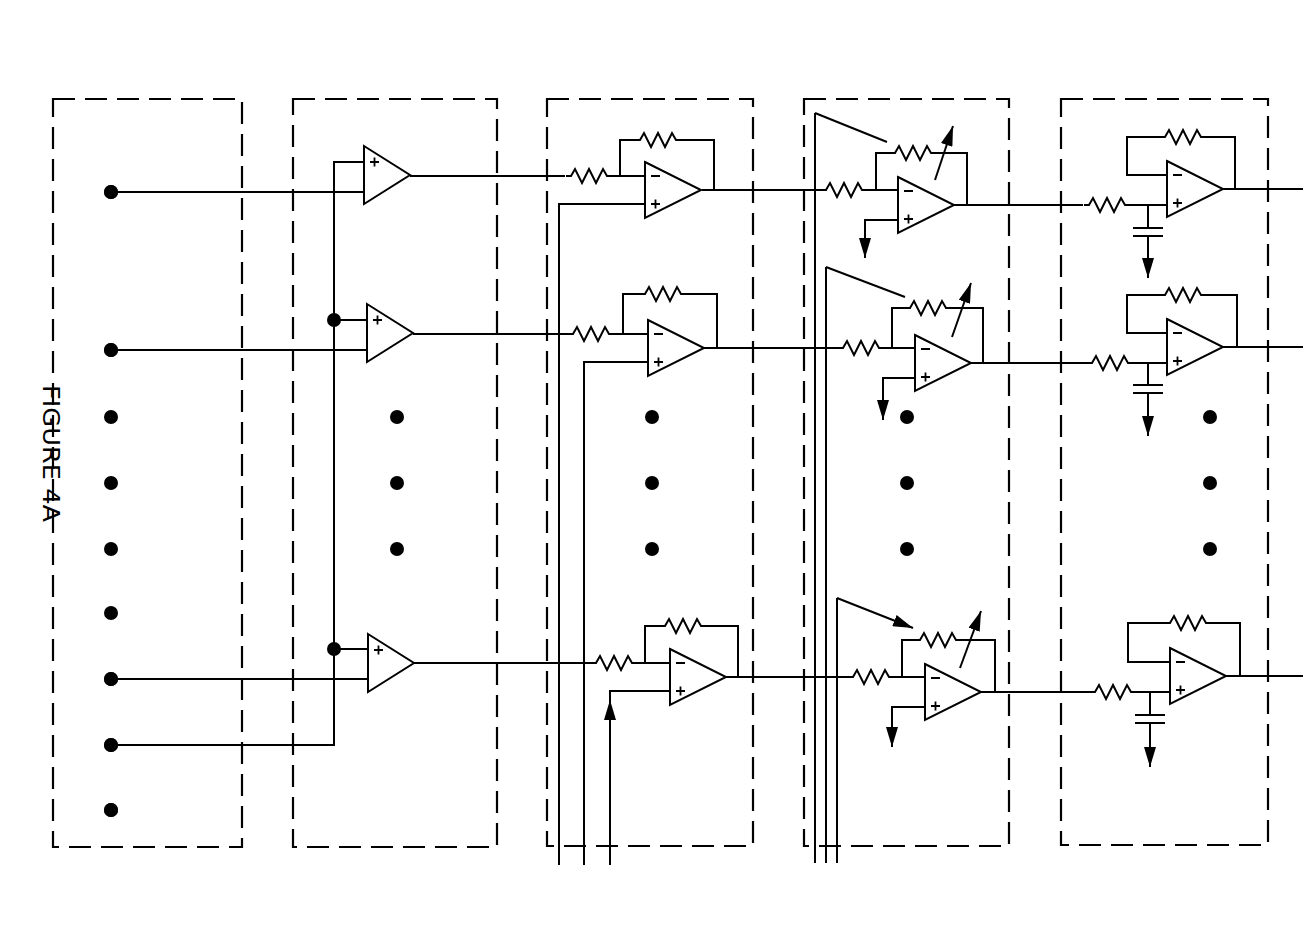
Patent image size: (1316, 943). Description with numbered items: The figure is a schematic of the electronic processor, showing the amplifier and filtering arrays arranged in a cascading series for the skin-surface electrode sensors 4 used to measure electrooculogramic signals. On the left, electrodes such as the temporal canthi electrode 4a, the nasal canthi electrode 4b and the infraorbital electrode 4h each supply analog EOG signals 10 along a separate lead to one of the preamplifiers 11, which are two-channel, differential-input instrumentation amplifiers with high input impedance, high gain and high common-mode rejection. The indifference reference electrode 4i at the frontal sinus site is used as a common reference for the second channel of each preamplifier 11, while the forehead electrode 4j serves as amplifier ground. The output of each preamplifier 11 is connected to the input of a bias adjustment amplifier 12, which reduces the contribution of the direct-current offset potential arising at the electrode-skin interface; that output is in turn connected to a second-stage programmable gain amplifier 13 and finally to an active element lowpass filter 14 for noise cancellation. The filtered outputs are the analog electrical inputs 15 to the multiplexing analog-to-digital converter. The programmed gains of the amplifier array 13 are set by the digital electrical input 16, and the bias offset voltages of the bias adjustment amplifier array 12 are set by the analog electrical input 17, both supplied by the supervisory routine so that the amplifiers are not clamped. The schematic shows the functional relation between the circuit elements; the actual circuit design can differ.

The skin-surface electrode sensors 4 is at (147, 431).
The temporal canthi electrode 4a is at (93, 192).
The nasal canthi electrode 4b is at (93, 350).
The infraorbital electrode 4h is at (93, 679).
The indifference reference electrode 4i is at (94, 745).
The amplifier ground electrode 4j is at (94, 810).
The analog EOG signals 10 is at (241, 175).
The preamplifiers 11 is at (355, 431).
The bias adjustment amplifiers 12 is at (698, 430).
The programmable gain amplifiers 13 is at (945, 430).
The active element lowpass filters 14 is at (1182, 430).
The analog electrical inputs 15 is at (1265, 172).
The digital electrical input 16 is at (862, 507).
The analog electrical input 17 is at (614, 552).